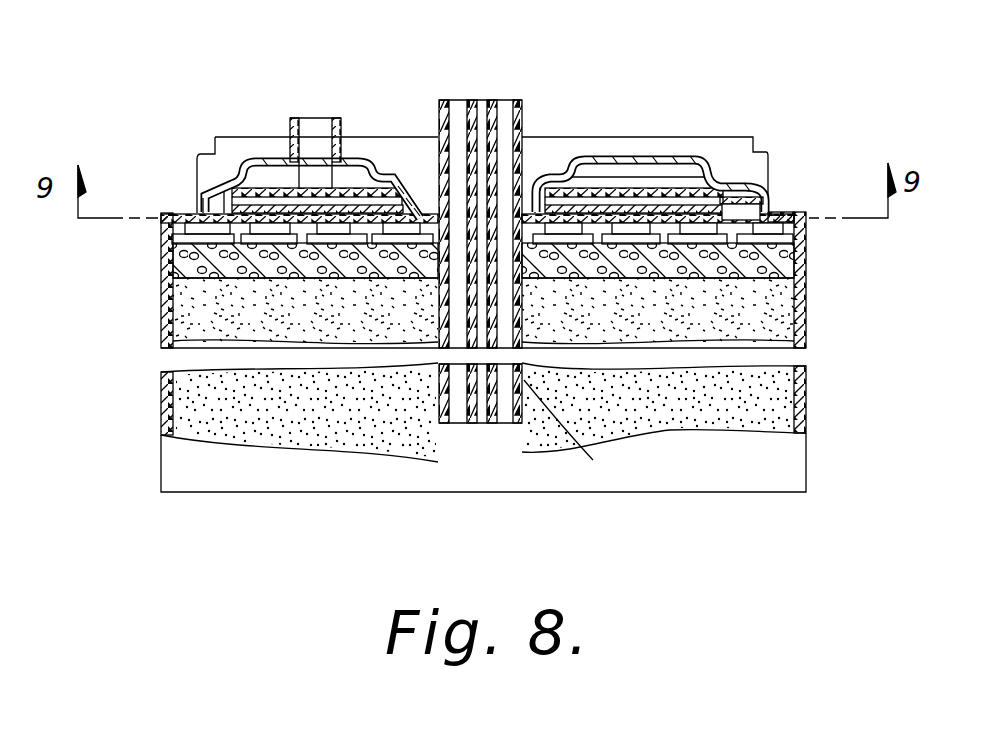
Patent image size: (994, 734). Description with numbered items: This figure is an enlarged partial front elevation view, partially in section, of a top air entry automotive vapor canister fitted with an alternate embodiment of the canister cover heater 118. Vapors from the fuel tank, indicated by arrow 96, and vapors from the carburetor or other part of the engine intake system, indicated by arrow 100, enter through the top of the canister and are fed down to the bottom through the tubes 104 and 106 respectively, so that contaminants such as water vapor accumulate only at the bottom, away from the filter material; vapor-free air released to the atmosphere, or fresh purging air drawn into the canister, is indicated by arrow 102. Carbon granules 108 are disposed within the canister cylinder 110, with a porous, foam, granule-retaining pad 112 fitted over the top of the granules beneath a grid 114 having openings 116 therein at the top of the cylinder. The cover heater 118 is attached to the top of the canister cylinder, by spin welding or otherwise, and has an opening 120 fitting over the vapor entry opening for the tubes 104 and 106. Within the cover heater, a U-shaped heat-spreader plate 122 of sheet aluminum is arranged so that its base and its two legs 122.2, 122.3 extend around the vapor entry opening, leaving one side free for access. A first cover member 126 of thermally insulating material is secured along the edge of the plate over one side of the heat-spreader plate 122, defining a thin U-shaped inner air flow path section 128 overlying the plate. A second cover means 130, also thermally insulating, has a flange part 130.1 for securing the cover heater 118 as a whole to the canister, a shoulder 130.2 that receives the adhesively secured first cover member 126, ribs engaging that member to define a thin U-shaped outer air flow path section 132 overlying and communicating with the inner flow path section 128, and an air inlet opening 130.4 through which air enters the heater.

The arrow 96 is at (458, 70).
The arrow 100 is at (481, 38).
The arrow 102 is at (315, 107).
The tube 104 is at (517, 427).
The tube 106 is at (576, 427).
The carbon granules 108 is at (180, 321).
The canister cylinder 110 is at (178, 402).
The porous, foam, granule-retaining pad 112 is at (176, 262).
The grid 114 is at (178, 236).
The openings 116 is at (200, 212).
The canister cover heater 118 is at (712, 156).
The opening 120 is at (531, 212).
The U-shaped heat-spreader plate 122 is at (318, 210).
The leg 122.2 is at (362, 185).
The leg 122.3 is at (605, 210).
The first cover member 126 is at (274, 180).
The inner air flow path section 128 is at (732, 176).
The second cover means 130 is at (233, 172).
The flange part 130.1 is at (174, 210).
The shoulder 130.2 is at (230, 168).
The air inlet opening 130.4 is at (325, 118).
The outer air flow path section 132 is at (307, 165).